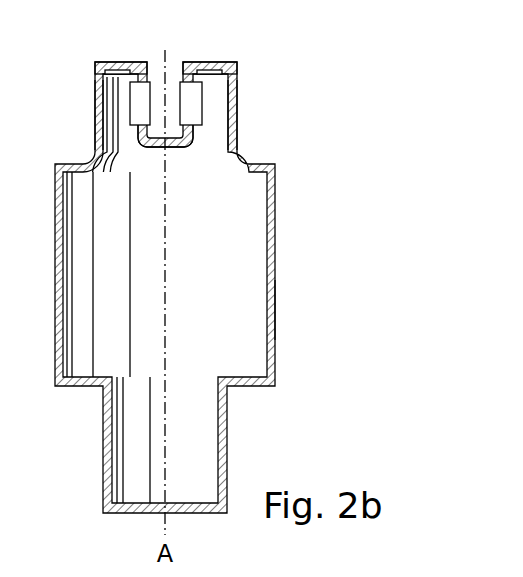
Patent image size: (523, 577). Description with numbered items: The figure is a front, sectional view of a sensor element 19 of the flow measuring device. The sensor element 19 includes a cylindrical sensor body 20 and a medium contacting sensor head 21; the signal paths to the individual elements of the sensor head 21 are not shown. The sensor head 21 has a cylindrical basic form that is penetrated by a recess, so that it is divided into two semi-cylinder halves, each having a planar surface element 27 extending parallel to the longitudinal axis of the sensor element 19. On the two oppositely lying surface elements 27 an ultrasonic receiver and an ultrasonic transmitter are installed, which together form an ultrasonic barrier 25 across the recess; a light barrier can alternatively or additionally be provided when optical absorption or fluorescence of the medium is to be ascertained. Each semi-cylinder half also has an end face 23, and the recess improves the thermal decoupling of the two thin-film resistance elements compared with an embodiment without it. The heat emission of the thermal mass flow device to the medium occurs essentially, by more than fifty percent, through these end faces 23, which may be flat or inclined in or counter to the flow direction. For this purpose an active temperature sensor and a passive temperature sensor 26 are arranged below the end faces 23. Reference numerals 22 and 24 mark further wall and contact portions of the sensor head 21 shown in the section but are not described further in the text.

The sensor element 19 is at (275, 223).
The sensor body 20 is at (268, 312).
The sensor head 21 is at (232, 124).
The neck wall 22 is at (99, 129).
The end face 23 is at (212, 62).
The contact element 24 is at (158, 100).
The ultrasonic barrier 25 is at (196, 101).
The temperature sensor 26 is at (120, 62).
The surface element 27 is at (190, 133).